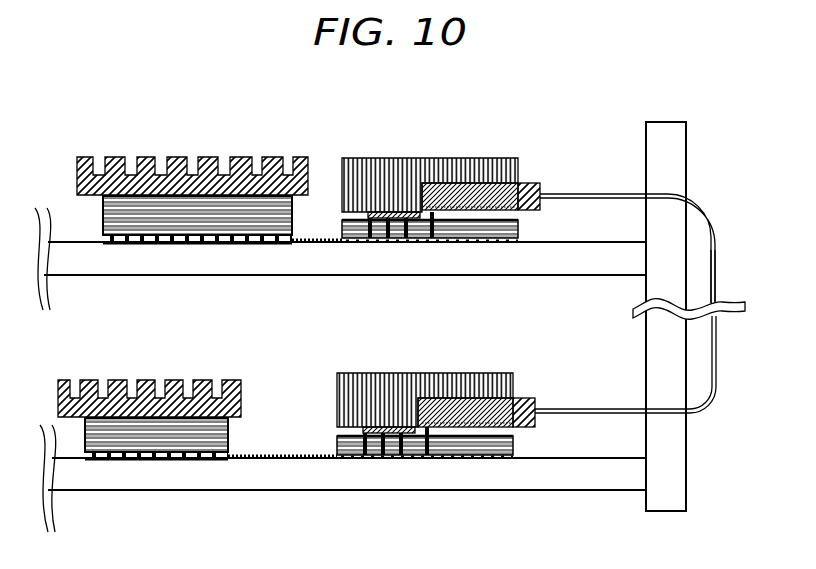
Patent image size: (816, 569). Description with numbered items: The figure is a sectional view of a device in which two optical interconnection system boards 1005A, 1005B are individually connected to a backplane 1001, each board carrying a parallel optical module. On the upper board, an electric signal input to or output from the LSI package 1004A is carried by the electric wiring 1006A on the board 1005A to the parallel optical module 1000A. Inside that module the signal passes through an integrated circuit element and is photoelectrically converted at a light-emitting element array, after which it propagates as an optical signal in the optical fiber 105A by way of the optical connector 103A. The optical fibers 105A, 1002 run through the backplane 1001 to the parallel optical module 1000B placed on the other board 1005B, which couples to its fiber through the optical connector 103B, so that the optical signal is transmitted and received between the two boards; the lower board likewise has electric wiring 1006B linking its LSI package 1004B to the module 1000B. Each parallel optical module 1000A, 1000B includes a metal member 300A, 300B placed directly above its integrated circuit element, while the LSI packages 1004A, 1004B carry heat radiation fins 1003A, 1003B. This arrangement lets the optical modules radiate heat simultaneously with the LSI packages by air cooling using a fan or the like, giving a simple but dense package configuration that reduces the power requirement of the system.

The backplane 1001 is at (657, 153).
The optical fiber 1002 is at (713, 243).
The parallel optical module 1000A is at (478, 171).
The parallel optical module 1000B is at (470, 387).
The metal member 300A is at (497, 164).
The metal member 300B is at (502, 388).
The optical fiber 105A is at (568, 193).
The optical connector 103A is at (537, 207).
The optical connector 103B is at (532, 427).
The heat radiation fin 1003A is at (146, 183).
The heat radiation fin 1003B is at (183, 393).
The LSI package 1004A is at (168, 225).
The LSI package 1004B is at (152, 442).
The optical interconnection system board 1005A is at (267, 262).
The optical interconnection system board 1005B is at (247, 477).
The electric wiring 1006A is at (317, 246).
The electric wiring 1006B is at (260, 457).